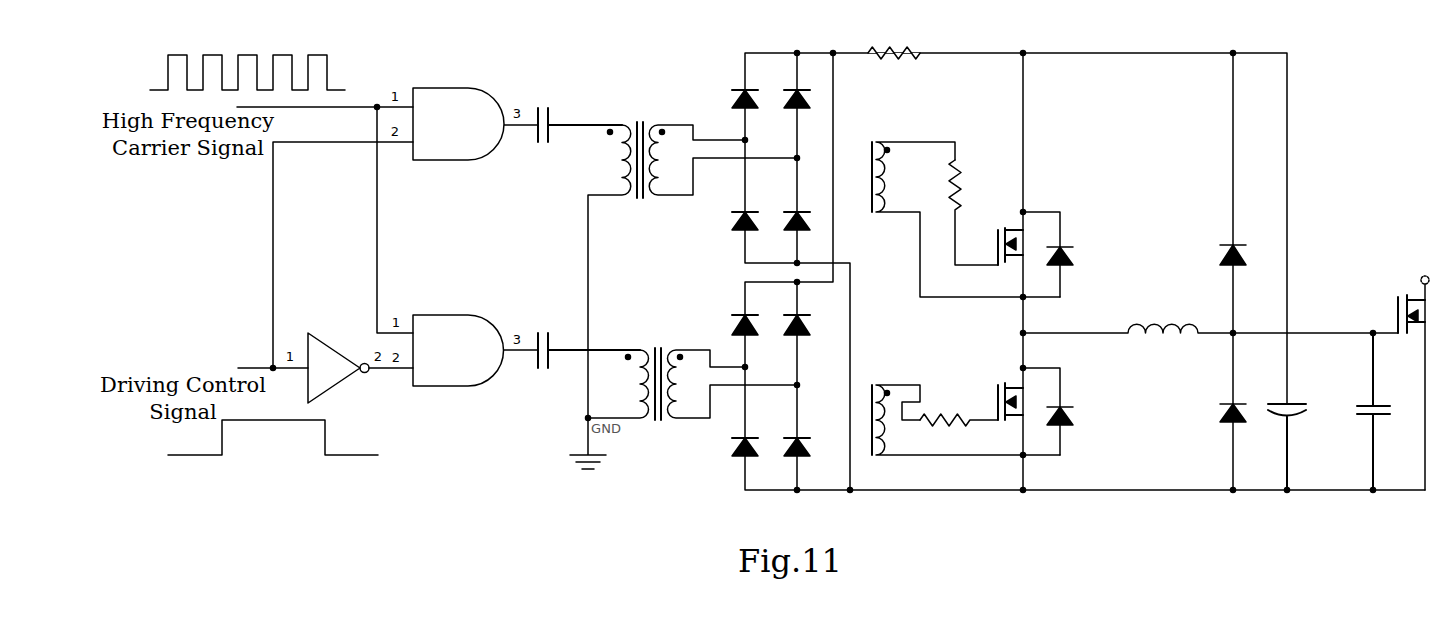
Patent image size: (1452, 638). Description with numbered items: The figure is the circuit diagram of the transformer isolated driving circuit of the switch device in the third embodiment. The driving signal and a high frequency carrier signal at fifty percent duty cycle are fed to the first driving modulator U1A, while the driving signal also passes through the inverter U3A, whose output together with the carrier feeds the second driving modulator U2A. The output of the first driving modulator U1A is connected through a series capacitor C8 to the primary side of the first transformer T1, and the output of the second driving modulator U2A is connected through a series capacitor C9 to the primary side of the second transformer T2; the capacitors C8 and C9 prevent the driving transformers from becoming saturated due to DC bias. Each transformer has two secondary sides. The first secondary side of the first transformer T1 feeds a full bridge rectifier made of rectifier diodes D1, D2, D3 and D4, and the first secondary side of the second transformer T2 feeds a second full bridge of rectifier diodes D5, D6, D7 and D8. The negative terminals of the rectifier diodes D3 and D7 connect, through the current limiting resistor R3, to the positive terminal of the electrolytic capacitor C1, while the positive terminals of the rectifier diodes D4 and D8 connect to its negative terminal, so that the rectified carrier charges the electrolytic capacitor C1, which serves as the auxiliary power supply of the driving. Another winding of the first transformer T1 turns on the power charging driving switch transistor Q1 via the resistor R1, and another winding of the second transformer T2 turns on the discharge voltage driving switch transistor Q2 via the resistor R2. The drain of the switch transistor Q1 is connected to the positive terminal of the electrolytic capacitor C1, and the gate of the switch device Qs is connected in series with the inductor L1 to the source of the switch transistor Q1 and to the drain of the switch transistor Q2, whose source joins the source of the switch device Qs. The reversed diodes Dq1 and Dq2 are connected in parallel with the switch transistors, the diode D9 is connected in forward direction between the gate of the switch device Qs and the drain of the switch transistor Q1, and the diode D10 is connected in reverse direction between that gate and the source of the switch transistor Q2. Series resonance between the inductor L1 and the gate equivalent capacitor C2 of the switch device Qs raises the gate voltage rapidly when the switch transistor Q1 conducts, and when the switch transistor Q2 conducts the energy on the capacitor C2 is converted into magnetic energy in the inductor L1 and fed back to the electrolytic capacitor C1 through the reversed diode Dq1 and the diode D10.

The first driving modulator U1A is at (475, 115).
The second driving modulator U2A is at (475, 341).
The inverter U3A is at (360, 366).
The capacitor C8 is at (579, 114).
The capacitor C9 is at (589, 338).
The first transformer T1 is at (823, 262).
The second transformer T2 is at (824, 393).
The rectifier diode D1 is at (735, 90).
The rectifier diode D2 is at (735, 212).
The rectifier diode D3 is at (786, 90).
The rectifier diode D4 is at (786, 212).
The rectifier diode D5 is at (735, 316).
The rectifier diode D6 is at (735, 437).
The rectifier diode D7 is at (786, 316).
The rectifier diode D8 is at (786, 437).
The current limiting resistor R3 is at (894, 40).
The resistor R1 is at (973, 203).
The resistor R2 is at (959, 406).
The power charging driving switch transistor Q1 is at (997, 239).
The discharge voltage driving switch transistor Q2 is at (997, 394).
The reversed diode Dq1 is at (1061, 254).
The reversed diode Dq2 is at (1061, 411).
The inductor L1 is at (1210, 316).
The diode D9 is at (1222, 271).
The diode D10 is at (1223, 404).
The electrolytic capacitor C1 is at (1295, 438).
The equivalent capacitor C2 is at (1384, 411).
The switch device Qs is at (1411, 377).